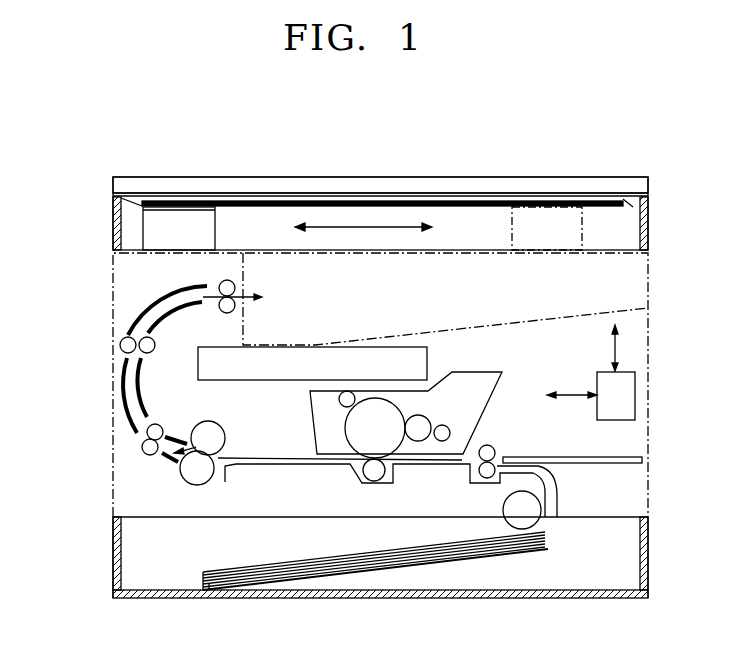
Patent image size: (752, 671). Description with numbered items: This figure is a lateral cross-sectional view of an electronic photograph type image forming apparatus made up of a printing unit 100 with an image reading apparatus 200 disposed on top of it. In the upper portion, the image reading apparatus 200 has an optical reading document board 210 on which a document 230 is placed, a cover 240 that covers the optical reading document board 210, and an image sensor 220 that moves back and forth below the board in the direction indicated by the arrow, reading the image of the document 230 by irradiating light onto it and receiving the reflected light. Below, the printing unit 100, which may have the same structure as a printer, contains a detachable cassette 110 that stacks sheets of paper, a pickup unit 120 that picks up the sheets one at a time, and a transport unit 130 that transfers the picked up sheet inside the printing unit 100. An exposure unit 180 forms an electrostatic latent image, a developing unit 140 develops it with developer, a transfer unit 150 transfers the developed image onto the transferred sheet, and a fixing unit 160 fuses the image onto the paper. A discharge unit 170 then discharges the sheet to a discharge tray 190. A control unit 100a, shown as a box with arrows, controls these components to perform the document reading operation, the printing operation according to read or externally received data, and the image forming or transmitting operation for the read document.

The printing unit 100 is at (93, 256).
The control unit 100a is at (630, 395).
The cassette 110 is at (362, 598).
The pickup unit 120 is at (505, 510).
The transport unit 130 is at (490, 447).
The developing unit 140 is at (502, 372).
The transfer unit 150 is at (362, 472).
The fixing unit 160 is at (185, 478).
The discharge unit 170 is at (219, 283).
The exposure unit 180 is at (252, 380).
The discharge tray 190 is at (606, 312).
The image reading apparatus 200 is at (93, 180).
The optical reading document board 210 is at (178, 197).
The image sensor 220 is at (208, 228).
The document 230 is at (343, 198).
The cover 240 is at (415, 190).